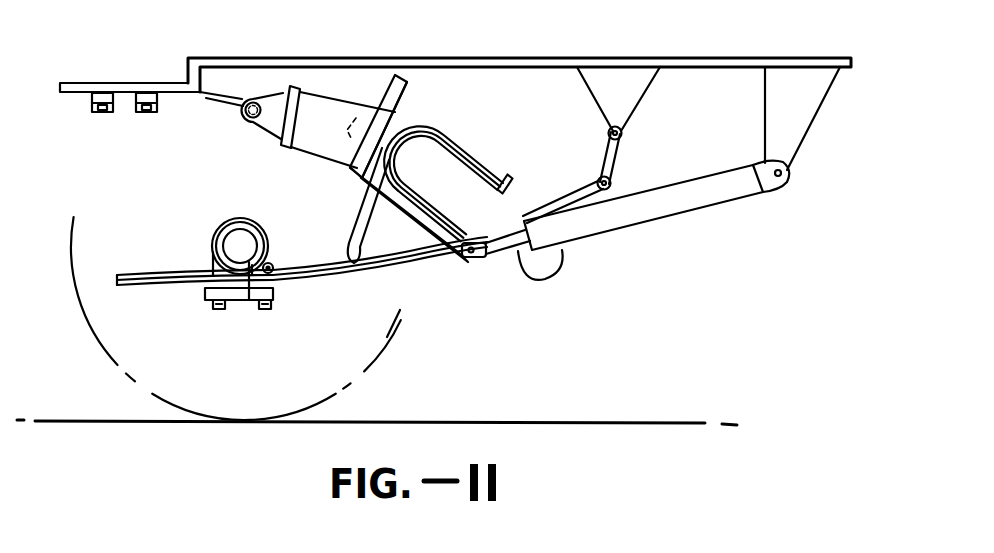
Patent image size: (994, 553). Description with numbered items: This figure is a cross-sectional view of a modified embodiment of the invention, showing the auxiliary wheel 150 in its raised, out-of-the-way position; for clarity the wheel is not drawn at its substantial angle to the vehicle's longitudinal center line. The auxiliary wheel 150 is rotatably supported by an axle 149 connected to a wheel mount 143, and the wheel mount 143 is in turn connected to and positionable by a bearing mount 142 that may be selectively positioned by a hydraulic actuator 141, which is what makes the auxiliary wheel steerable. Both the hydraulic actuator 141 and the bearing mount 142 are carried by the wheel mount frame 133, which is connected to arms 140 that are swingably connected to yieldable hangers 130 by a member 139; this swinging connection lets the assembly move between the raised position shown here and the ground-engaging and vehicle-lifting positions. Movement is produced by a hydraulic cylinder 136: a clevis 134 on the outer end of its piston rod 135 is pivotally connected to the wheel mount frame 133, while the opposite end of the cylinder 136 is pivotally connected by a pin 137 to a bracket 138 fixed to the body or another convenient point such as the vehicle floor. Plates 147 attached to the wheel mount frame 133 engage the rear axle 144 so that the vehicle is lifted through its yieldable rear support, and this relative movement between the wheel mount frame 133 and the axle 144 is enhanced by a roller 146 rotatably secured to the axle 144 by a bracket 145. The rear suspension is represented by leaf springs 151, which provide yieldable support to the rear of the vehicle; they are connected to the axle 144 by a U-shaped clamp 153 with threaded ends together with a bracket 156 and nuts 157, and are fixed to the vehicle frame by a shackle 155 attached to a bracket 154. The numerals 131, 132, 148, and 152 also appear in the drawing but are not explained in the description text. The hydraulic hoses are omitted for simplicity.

The yieldable hangers 130 is at (220, 97).
The mounting plate 131 is at (98, 92).
The bolts 132 is at (146, 92).
The wheel mount frame 133 is at (437, 260).
The clevis 134 is at (486, 252).
The piston rod 135 is at (530, 265).
The hydraulic cylinder 136 is at (637, 208).
The pin 137 is at (783, 187).
The bracket 138 is at (777, 102).
The member 139 is at (273, 103).
The arms 140 is at (322, 105).
The hydraulic actuator 141 is at (404, 77).
The bearing mount 142 is at (412, 108).
The wheel mount 143 is at (467, 150).
The axle 144 is at (241, 218).
The bracket 145 is at (248, 300).
The roller 146 is at (266, 262).
The plates 147 is at (357, 228).
The leaf spring 148 is at (376, 270).
The axle 149 is at (512, 176).
The auxiliary wheel 150 is at (562, 262).
The leaf springs 151 is at (383, 273).
The wheel 152 is at (92, 345).
The U-shaped clamp 153 is at (213, 254).
The bracket 154 is at (636, 88).
The shackle 155 is at (614, 160).
The bracket 156 is at (205, 293).
The nuts 157 is at (238, 330).